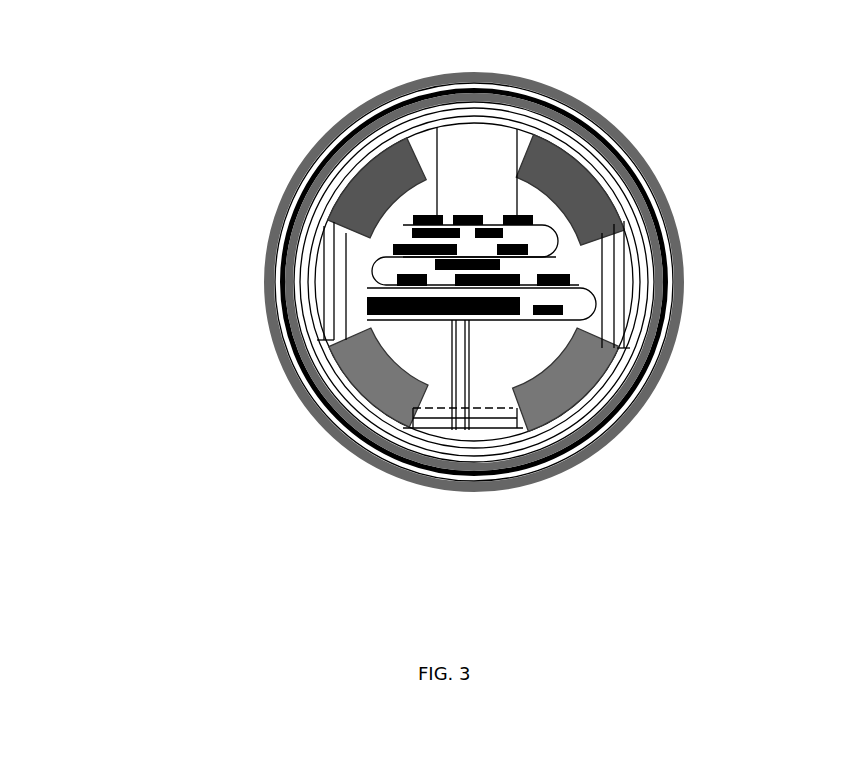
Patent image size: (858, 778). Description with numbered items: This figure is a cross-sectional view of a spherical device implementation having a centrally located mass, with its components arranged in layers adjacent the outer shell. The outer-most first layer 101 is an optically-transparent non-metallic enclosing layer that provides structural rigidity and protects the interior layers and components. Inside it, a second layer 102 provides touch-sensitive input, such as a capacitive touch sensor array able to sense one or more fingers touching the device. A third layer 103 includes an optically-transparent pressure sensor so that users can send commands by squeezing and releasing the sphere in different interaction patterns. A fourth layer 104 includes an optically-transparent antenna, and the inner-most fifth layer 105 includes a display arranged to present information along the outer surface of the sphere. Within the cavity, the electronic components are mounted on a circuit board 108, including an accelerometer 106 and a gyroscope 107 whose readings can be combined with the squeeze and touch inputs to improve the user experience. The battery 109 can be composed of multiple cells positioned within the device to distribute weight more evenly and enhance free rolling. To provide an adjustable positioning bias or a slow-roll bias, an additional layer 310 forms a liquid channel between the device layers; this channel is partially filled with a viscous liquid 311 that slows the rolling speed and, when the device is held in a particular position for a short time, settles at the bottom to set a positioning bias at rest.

The first layer 101 is at (531, 268).
The second layer 102 is at (542, 282).
The third layer 103 is at (551, 282).
The fourth layer 104 is at (553, 282).
The fifth layer 105 is at (553, 282).
The accelerometer 106 is at (357, 148).
The gyroscope 107 is at (474, 142).
The circuit board 108 is at (484, 255).
The battery 109 is at (350, 272).
The liquid channel layer 310 is at (371, 282).
The viscous liquid 311 is at (474, 327).